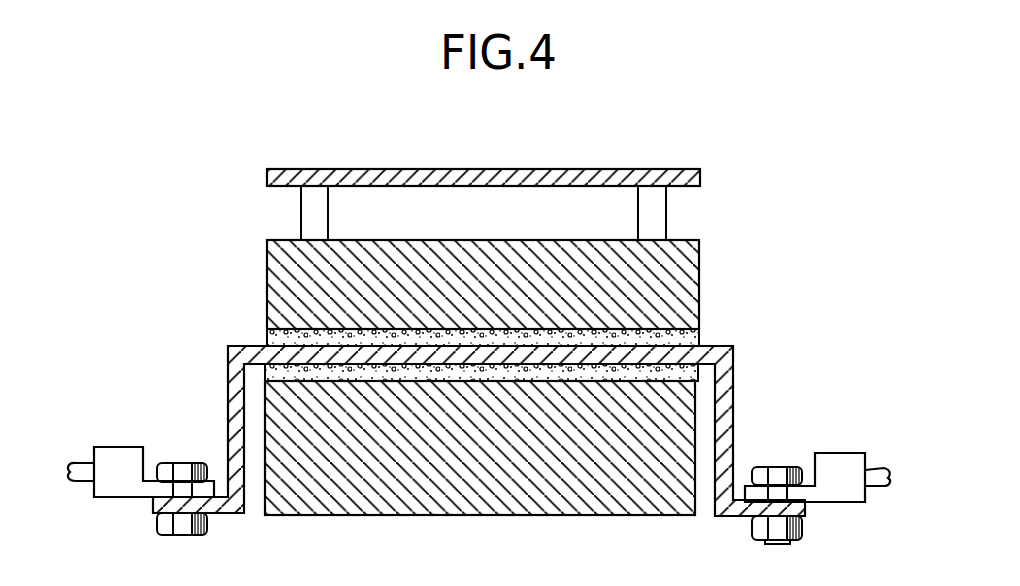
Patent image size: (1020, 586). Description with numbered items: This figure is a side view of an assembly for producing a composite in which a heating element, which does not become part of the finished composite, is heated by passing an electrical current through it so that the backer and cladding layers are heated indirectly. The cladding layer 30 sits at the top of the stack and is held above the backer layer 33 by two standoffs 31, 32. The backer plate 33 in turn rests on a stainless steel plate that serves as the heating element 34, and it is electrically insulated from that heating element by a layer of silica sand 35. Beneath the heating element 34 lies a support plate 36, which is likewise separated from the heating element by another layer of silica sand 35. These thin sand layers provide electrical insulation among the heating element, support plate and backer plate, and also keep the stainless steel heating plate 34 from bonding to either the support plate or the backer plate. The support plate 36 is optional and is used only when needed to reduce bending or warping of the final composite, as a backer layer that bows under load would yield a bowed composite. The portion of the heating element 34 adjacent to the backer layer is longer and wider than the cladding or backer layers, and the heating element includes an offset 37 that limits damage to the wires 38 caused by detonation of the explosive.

The cladding layer 30 is at (505, 169).
The standoff 31 is at (328, 197).
The standoff 32 is at (638, 203).
The backer layer 33 is at (267, 272).
The heating element 34 is at (737, 421).
The layer of silica sand 35 is at (266, 338).
The support plate 36 is at (483, 518).
The offset 37 is at (715, 518).
The wires 38 is at (79, 483).